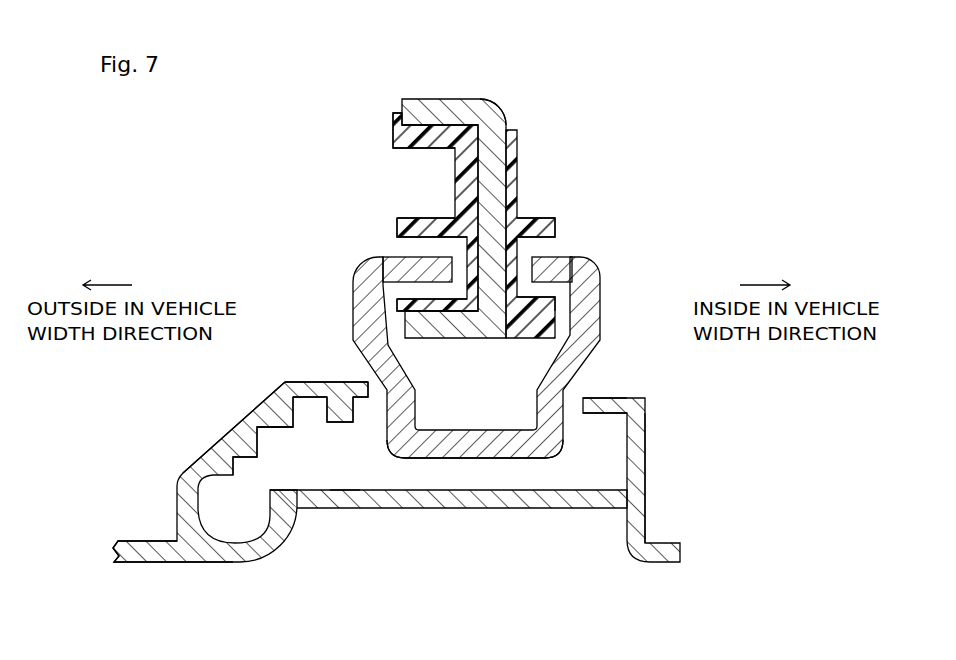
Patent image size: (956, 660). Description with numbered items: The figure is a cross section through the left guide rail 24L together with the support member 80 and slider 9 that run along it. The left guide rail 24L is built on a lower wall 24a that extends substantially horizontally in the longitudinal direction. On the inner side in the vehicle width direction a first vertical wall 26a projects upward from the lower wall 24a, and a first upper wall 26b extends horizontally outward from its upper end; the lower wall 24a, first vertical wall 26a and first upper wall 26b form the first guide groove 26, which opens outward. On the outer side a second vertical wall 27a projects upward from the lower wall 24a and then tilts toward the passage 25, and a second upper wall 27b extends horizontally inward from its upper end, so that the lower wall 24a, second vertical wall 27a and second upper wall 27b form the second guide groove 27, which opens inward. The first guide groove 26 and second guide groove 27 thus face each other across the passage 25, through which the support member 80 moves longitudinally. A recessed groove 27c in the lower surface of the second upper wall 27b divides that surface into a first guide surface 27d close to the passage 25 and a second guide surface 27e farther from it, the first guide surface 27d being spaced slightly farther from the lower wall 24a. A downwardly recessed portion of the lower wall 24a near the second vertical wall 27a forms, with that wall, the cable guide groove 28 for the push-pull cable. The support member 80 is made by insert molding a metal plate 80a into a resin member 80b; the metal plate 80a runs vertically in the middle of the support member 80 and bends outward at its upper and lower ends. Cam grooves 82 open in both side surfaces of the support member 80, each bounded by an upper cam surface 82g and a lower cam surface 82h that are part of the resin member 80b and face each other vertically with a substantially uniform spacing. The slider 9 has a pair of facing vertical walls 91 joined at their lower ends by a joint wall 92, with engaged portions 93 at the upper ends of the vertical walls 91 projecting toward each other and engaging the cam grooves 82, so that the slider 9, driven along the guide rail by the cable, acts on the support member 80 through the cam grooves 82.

The support member 80 is at (413, 183).
The metal plate 80a is at (457, 103).
The resin member 80b is at (397, 133).
The cam groove 82 is at (480, 225).
The upper cam surface 82g is at (398, 246).
The lower cam surface 82h is at (397, 300).
The engaged portion 93 is at (437, 270).
The vertical wall 91 is at (476, 401).
The joint wall 92 is at (468, 460).
The slider 9 is at (492, 399).
The second guide groove 27 is at (264, 484).
The second vertical wall 27a is at (248, 415).
The second upper wall 27b is at (335, 380).
The recessed groove 27c is at (307, 412).
The first guide surface 27d is at (340, 422).
The second guide surface 27e is at (278, 430).
The cable guide groove 28 is at (173, 568).
The passage 25 is at (343, 482).
The first guide groove 26 is at (647, 461).
The first vertical wall 26a is at (646, 442).
The first upper wall 26b is at (612, 397).
The lower wall 24a is at (528, 510).
The left guide rail 24L is at (415, 488).